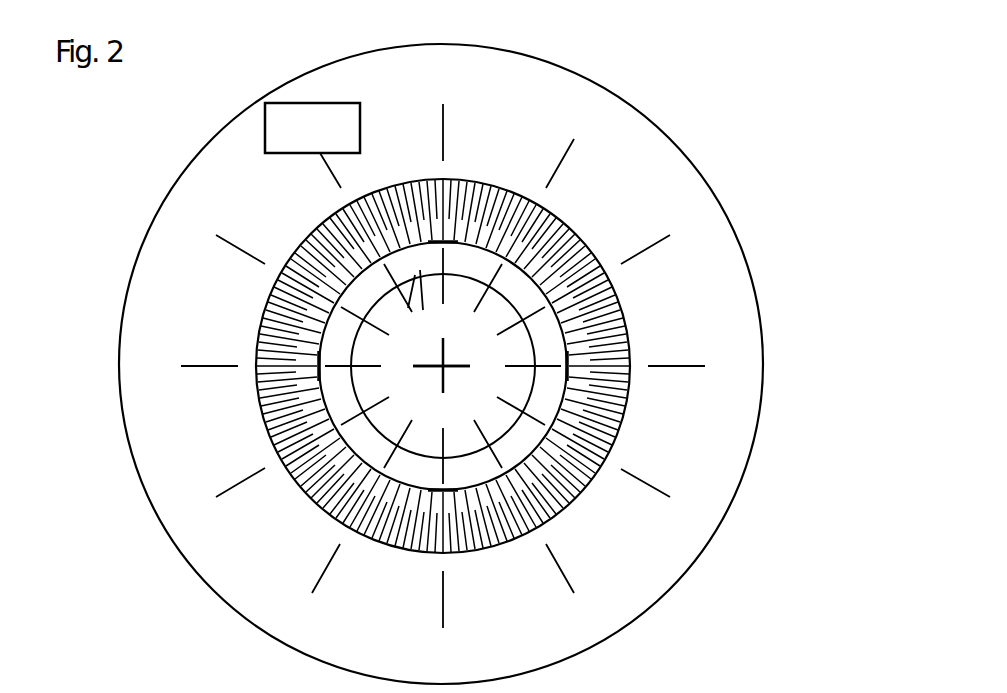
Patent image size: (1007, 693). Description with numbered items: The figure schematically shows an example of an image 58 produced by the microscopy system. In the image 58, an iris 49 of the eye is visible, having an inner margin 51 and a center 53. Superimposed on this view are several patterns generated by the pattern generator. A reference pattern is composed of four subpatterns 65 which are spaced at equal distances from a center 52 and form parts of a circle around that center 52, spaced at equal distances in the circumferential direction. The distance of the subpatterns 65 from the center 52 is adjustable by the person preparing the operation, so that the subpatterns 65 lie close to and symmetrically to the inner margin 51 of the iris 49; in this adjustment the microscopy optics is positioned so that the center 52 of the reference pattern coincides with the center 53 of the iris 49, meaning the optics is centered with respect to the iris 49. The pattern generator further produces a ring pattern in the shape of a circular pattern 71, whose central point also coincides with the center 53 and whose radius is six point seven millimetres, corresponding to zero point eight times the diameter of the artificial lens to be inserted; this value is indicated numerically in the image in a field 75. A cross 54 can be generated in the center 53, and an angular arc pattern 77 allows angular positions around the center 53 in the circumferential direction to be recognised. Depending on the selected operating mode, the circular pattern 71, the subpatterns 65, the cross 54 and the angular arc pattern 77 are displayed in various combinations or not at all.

The image 58 is at (744, 81).
The angular arc pattern 77 is at (702, 264).
The iris 49 is at (576, 206).
The subpatterns 65 is at (450, 238).
The inner margin 51 is at (565, 321).
The center 52 is at (440, 372).
The center 53 is at (446, 372).
The cross 54 is at (445, 343).
The circular pattern 71 is at (420, 308).
The field 75 is at (315, 103).